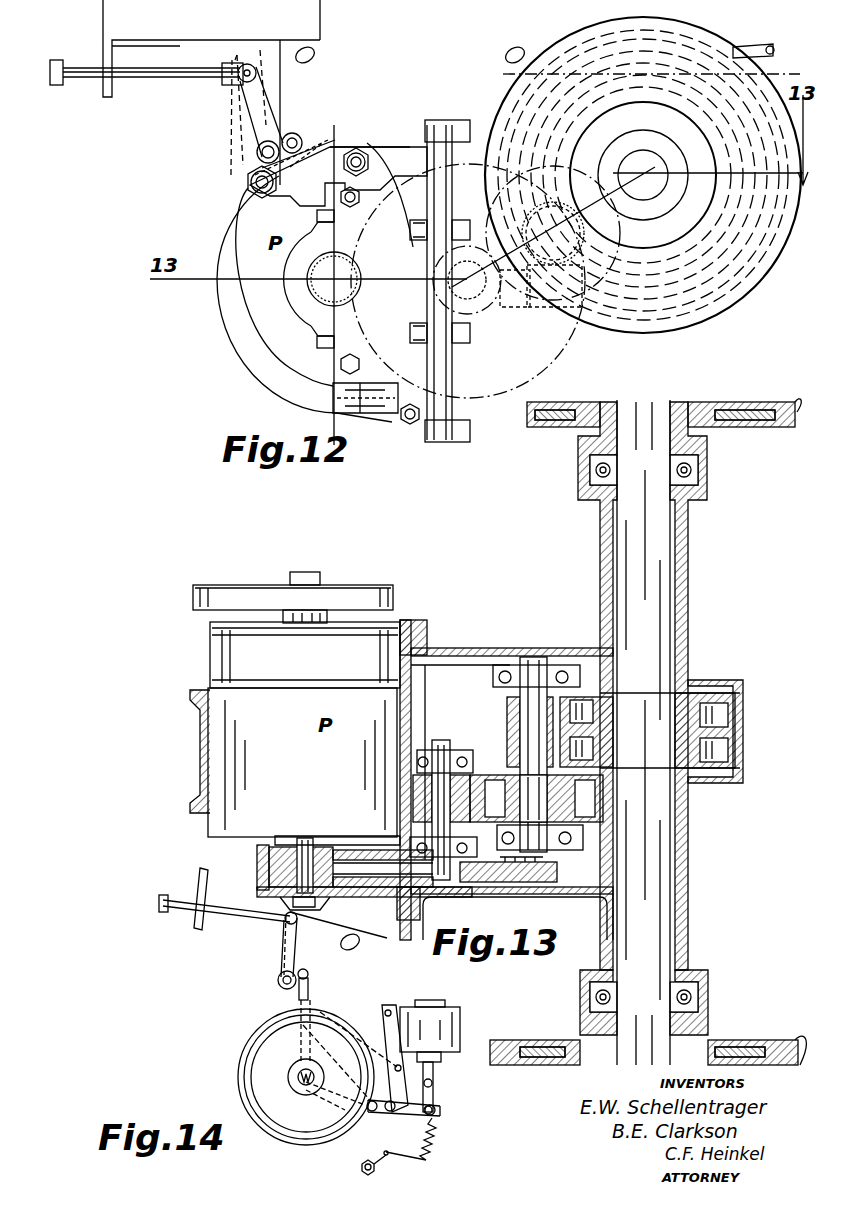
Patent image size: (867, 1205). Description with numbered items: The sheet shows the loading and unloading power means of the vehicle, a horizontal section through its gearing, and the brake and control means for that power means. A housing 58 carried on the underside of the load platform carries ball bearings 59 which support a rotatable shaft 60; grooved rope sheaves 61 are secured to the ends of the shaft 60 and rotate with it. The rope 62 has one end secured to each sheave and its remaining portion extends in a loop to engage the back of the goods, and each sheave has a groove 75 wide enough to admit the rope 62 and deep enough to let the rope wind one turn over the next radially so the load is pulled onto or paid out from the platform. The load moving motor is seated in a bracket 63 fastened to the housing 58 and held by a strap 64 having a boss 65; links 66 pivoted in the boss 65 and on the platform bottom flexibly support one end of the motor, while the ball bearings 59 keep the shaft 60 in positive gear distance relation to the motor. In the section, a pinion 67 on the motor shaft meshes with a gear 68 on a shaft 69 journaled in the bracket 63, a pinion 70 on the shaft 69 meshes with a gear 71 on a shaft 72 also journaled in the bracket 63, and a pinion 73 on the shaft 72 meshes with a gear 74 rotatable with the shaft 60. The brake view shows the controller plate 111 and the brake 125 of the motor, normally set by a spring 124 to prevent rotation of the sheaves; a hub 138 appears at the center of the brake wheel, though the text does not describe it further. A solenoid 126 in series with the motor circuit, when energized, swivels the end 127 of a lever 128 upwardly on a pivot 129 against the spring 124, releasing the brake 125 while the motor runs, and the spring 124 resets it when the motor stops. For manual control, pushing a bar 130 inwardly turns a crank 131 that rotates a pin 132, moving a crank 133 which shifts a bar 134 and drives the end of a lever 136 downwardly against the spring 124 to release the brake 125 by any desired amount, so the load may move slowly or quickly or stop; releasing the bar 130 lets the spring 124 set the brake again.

In FIG. 12, the housing 58 is at (555, 135).
In FIG. 13, the housing 58 is at (690, 535).
In FIG. 13, the ball bearings 59 is at (700, 474).
In FIG. 12, the rotatable shaft 60 is at (643, 175).
In FIG. 13, the rotatable shaft 60 is at (643, 732).
In FIG. 12, the grooved rope sheaves 61 is at (643, 175).
In FIG. 13, the grooved rope sheaves 61 is at (775, 427).
In FIG. 12, the rope 62 is at (766, 43).
In FIG. 13, the rope 62 is at (745, 420).
In FIG. 13, the bracket 63 is at (412, 622).
In FIG. 12, the strap 64 is at (235, 340).
In FIG. 13, the strap 64 is at (192, 768).
In FIG. 12, the boss 65 is at (246, 188).
In FIG. 12, the links 66 is at (233, 128).
In FIG. 13, the pinion 67 is at (262, 862).
In FIG. 13, the gear 68 is at (372, 905).
In FIG. 13, the shaft 69 is at (440, 745).
In FIG. 13, the pinion 70 is at (410, 805).
In FIG. 13, the gear 71 is at (503, 775).
In FIG. 13, the shaft 72 is at (532, 665).
In FIG. 13, the pinion 73 is at (515, 712).
In FIG. 13, the gear 74 is at (594, 700).
In FIG. 13, the groove 75 is at (787, 719).
In FIG. 14, the plate 111 is at (195, 880).
In FIG. 14, the spring 124 is at (426, 1148).
In FIG. 13, the brake 125 is at (256, 590).
In FIG. 14, the brake 125 is at (248, 1048).
In FIG. 14, the solenoid 126 is at (460, 1017).
In FIG. 14, the end of lever 127 is at (438, 1110).
In FIG. 14, the lever 128 is at (372, 1112).
In FIG. 14, the pivot 129 is at (360, 1166).
In FIG. 12, the bar 130 is at (158, 80).
In FIG. 14, the bar 130 is at (185, 912).
In FIG. 12, the crank 131 is at (245, 105).
In FIG. 14, the crank 131 is at (282, 948).
In FIG. 12, the pin 132 is at (257, 152).
In FIG. 14, the pin 132 is at (279, 990).
In FIG. 12, the crank 133 is at (294, 133).
In FIG. 14, the crank 133 is at (308, 972).
In FIG. 12, the bar 134 is at (318, 150).
In FIG. 14, the bar 134 is at (310, 996).
In FIG. 14, the lever 136 is at (340, 1110).
In FIG. 14, the hub 138 is at (303, 1092).